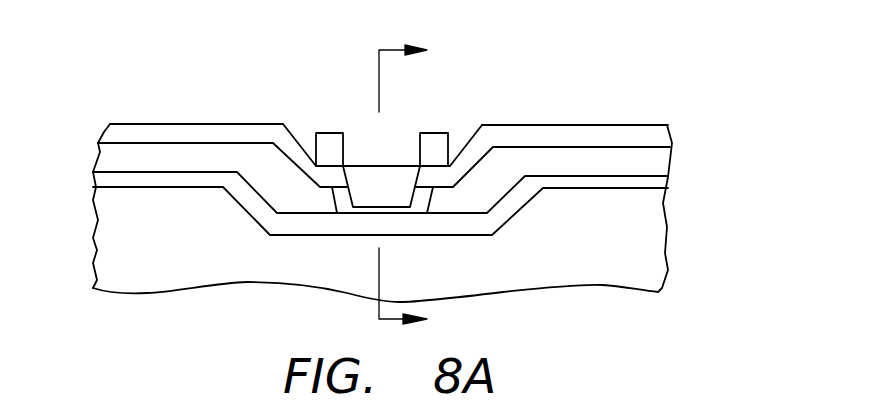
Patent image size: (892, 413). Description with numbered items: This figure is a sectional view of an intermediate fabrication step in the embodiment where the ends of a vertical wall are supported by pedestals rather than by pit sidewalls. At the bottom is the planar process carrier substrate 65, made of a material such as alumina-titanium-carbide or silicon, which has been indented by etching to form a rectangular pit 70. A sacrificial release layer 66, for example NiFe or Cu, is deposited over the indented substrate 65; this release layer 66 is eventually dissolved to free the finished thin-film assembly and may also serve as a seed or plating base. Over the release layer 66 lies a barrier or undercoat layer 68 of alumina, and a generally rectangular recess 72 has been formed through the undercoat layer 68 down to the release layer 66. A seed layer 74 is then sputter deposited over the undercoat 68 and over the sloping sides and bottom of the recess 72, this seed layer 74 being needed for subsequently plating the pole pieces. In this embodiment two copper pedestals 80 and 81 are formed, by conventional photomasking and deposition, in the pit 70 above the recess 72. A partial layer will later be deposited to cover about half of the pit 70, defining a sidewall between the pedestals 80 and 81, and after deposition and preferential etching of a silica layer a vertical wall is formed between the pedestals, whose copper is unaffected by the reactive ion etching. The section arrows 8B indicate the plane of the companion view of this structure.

The process carrier substrate 65 is at (640, 257).
The release layer 66 is at (662, 182).
The undercoat layer 68 is at (662, 160).
The seed layer 74 is at (661, 138).
The pit 70 is at (311, 123).
The recess 72 is at (415, 160).
The pedestal 80 is at (433, 137).
The pedestal 81 is at (331, 137).
The section line 8B- 8B is at (420, 188).